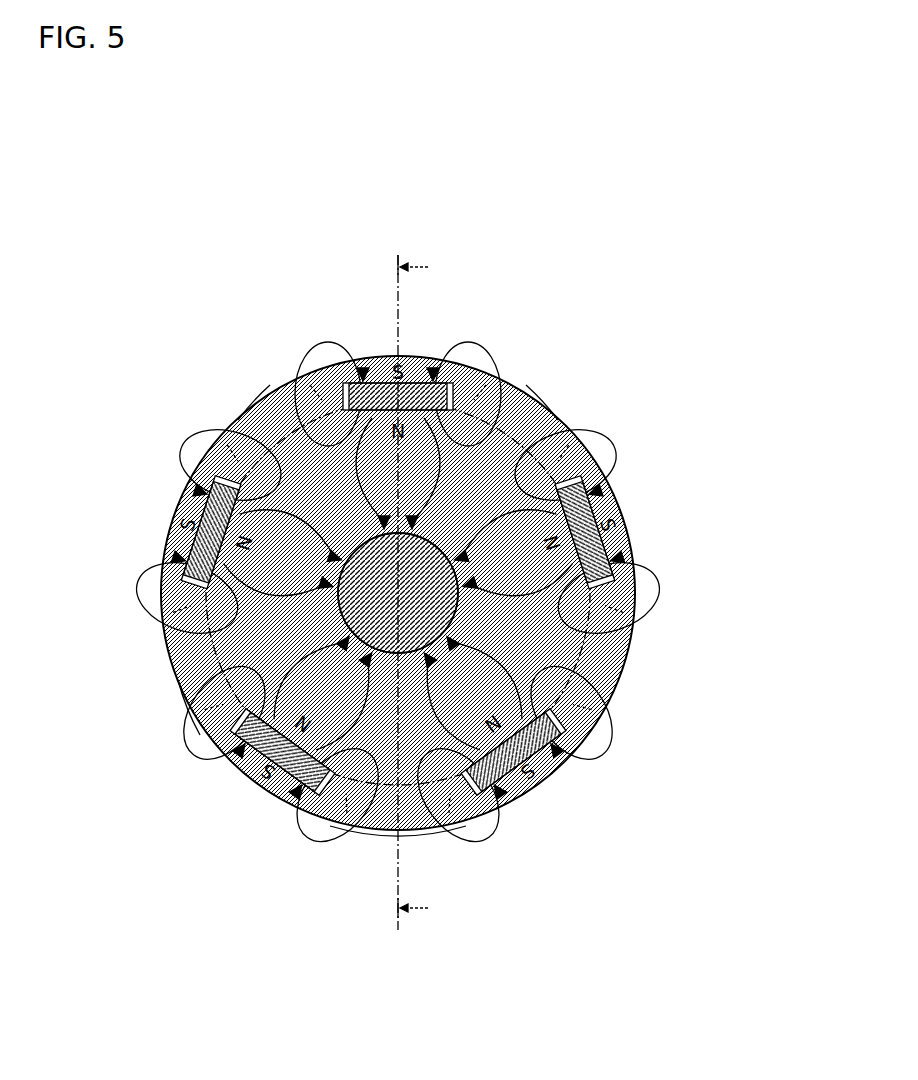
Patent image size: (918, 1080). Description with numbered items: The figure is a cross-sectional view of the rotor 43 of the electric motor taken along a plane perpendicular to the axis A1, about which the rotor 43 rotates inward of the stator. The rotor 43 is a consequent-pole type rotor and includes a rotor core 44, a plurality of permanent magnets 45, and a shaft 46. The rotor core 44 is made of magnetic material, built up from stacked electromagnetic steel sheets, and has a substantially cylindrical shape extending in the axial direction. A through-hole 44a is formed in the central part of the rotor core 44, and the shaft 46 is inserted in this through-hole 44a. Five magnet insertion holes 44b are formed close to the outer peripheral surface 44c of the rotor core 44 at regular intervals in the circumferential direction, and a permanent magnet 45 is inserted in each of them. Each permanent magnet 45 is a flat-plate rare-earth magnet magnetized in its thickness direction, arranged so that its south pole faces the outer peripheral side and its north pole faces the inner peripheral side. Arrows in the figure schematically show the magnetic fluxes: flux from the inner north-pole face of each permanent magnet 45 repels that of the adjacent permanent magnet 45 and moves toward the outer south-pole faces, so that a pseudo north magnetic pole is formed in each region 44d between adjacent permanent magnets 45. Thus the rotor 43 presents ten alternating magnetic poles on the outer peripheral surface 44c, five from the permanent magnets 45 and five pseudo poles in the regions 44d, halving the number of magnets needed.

The rotor 43 is at (787, 244).
The rotor core 44 is at (180, 680).
The through-hole 44a is at (382, 833).
The magnet insertion holes 44b is at (362, 366).
The outer peripheral surface 44c is at (182, 697).
The region between adjacent permanent magnets 44d is at (250, 395).
The permanent magnets 45 is at (435, 366).
The shaft 46 is at (366, 646).
The axis A1 is at (626, 664).